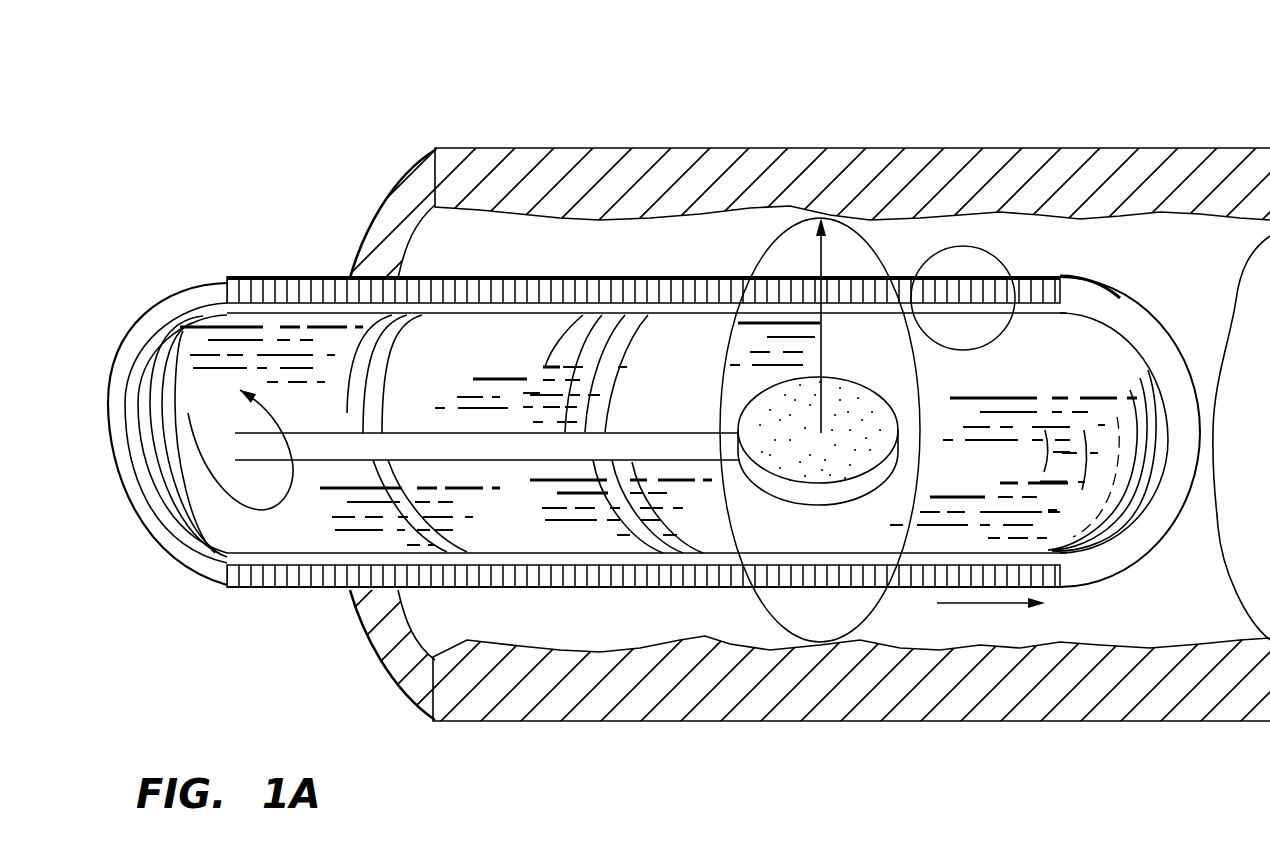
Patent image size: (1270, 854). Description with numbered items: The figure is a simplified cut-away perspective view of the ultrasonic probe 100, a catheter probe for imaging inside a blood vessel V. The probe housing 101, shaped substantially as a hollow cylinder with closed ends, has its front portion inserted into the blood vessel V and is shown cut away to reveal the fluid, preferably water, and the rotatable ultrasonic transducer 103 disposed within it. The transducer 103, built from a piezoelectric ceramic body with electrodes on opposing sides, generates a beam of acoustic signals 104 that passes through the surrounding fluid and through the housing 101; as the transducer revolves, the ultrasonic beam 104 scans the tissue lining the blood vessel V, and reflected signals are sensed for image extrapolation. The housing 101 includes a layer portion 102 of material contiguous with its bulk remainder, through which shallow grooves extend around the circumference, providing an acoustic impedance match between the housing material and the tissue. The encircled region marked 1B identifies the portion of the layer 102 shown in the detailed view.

The ultrasonic probe 100 is at (177, 160).
The probe housing 101 is at (1046, 275).
The layer portion 102 is at (694, 306).
The rotatable ultrasonic transducer 103 is at (832, 506).
The beam of acoustic signals 104 is at (822, 350).
The detailed view 1B is at (1005, 331).
The blood vessel V is at (714, 704).